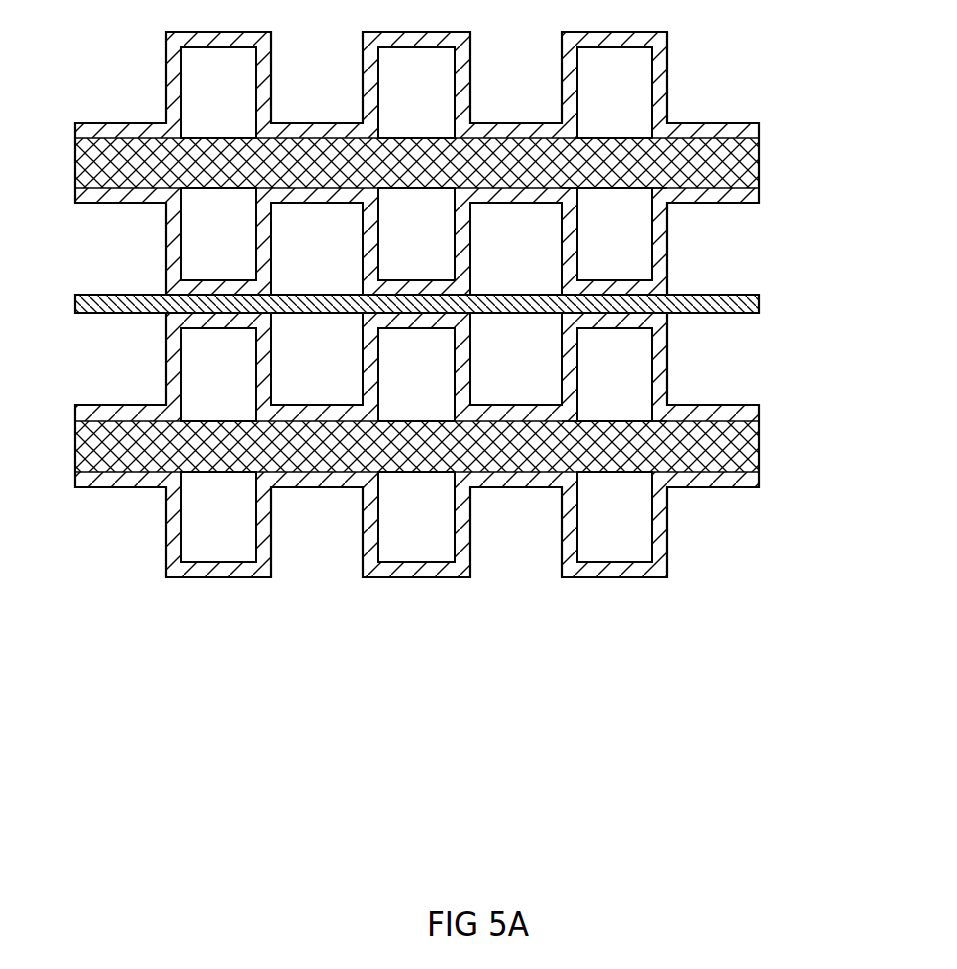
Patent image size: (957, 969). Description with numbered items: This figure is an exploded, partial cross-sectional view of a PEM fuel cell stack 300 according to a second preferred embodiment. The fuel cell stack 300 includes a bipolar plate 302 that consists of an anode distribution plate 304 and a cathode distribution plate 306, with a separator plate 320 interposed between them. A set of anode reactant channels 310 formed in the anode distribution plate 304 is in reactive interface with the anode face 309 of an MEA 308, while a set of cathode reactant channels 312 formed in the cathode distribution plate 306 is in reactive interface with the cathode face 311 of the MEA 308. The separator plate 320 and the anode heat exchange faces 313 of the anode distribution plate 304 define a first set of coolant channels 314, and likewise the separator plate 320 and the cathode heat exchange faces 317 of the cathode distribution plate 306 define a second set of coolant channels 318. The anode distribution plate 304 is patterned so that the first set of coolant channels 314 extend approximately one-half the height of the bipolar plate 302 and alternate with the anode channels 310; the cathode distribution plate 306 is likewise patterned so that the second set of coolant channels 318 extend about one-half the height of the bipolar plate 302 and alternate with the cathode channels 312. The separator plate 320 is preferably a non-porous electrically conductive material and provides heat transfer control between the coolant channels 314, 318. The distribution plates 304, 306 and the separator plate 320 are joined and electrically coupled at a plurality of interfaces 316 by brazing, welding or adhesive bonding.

The PEM fuel cell stack 300 is at (675, 620).
The bipolar plate 302 is at (68, 212).
The anode distribution plate 304 is at (727, 201).
The cathode distribution plate 306 is at (690, 413).
The MEA 308 is at (735, 160).
The anode face 309 is at (611, 190).
The anode reactant channels 310 is at (635, 262).
The cathode face 311 is at (601, 420).
The cathode reactant channels 312 is at (638, 362).
The anode heat exchange faces 313 is at (316, 203).
The first set of coolant channels 314 is at (515, 218).
The interfaces 316 is at (217, 295).
The cathode heat exchange faces 317 is at (304, 406).
The second set of coolant channels 318 is at (520, 366).
The separator plate 320 is at (760, 300).